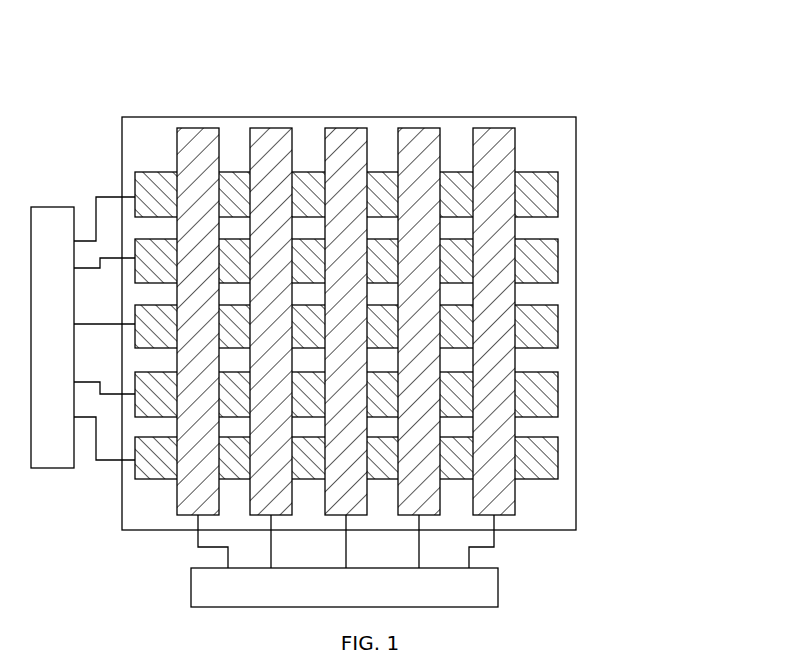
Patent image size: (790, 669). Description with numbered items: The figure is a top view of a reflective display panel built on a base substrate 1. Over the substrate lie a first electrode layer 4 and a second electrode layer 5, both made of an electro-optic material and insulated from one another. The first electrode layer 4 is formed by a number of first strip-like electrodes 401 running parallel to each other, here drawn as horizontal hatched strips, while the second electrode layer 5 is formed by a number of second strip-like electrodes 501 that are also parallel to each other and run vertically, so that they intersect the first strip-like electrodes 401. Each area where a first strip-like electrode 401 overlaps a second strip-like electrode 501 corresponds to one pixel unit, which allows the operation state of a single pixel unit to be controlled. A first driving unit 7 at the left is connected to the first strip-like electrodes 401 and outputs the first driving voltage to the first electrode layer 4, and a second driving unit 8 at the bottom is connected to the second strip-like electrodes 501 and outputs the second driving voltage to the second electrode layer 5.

The base substrate 1 is at (550, 117).
The first electrode layer 4 is at (677, 217).
The first strip-like electrodes 401 is at (543, 193).
The second electrode layer 5 is at (212, 42).
The second strip-like electrodes 501 is at (195, 143).
The first driving unit 7 is at (52, 207).
The second driving unit 8 is at (498, 587).